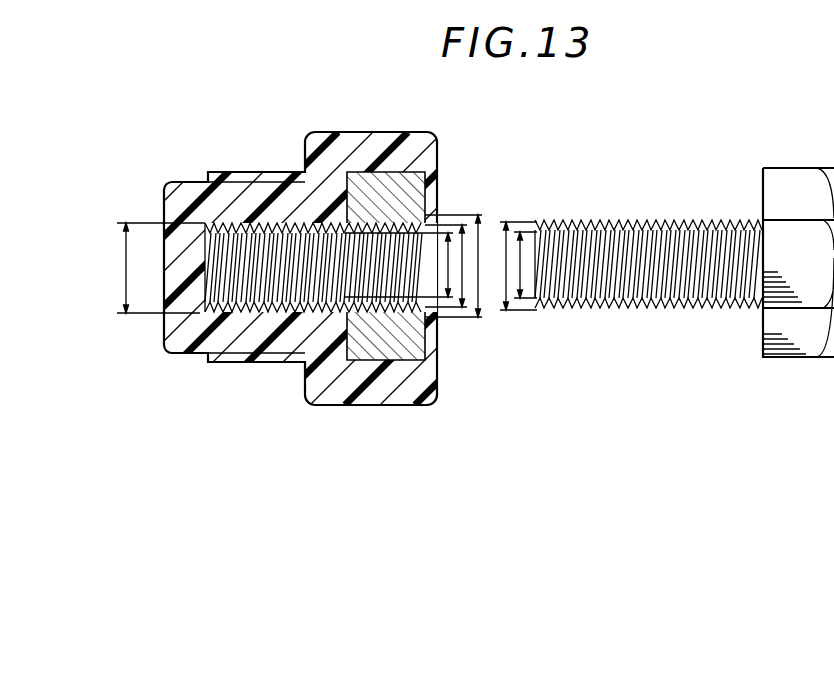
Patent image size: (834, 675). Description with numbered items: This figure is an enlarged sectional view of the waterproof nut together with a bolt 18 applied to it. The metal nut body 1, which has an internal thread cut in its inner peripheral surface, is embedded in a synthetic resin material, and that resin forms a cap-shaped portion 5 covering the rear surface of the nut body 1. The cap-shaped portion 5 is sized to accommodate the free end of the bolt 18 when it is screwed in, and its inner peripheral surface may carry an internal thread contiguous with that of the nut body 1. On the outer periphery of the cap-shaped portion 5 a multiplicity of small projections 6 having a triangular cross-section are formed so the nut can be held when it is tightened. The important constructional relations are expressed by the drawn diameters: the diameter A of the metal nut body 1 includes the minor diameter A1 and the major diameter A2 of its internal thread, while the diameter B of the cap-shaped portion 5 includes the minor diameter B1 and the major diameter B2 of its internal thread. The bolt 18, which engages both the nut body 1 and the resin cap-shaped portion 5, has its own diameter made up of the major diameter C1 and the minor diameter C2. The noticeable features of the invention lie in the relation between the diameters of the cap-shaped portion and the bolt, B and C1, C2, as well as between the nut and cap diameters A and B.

The nut body 1 is at (375, 343).
The cap-shaped portion 5 is at (185, 345).
The small projections 6 is at (268, 177).
The bolt 18 is at (655, 207).
The diameter of the metal nut A is at (447, 200).
The minor diameter of the nut internal thread A1 is at (480, 255).
The major diameter of the nut internal thread A2 is at (502, 258).
The diameter of the cap-shaped portion B is at (262, 257).
The minor diameter of the cap-shaped portion internal thread B1 is at (450, 262).
The major diameter of the cap-shaped portion internal thread B2 is at (122, 262).
The major diameter of the bolt C1 is at (502, 268).
The minor diameter of the bolt C2 is at (518, 264).